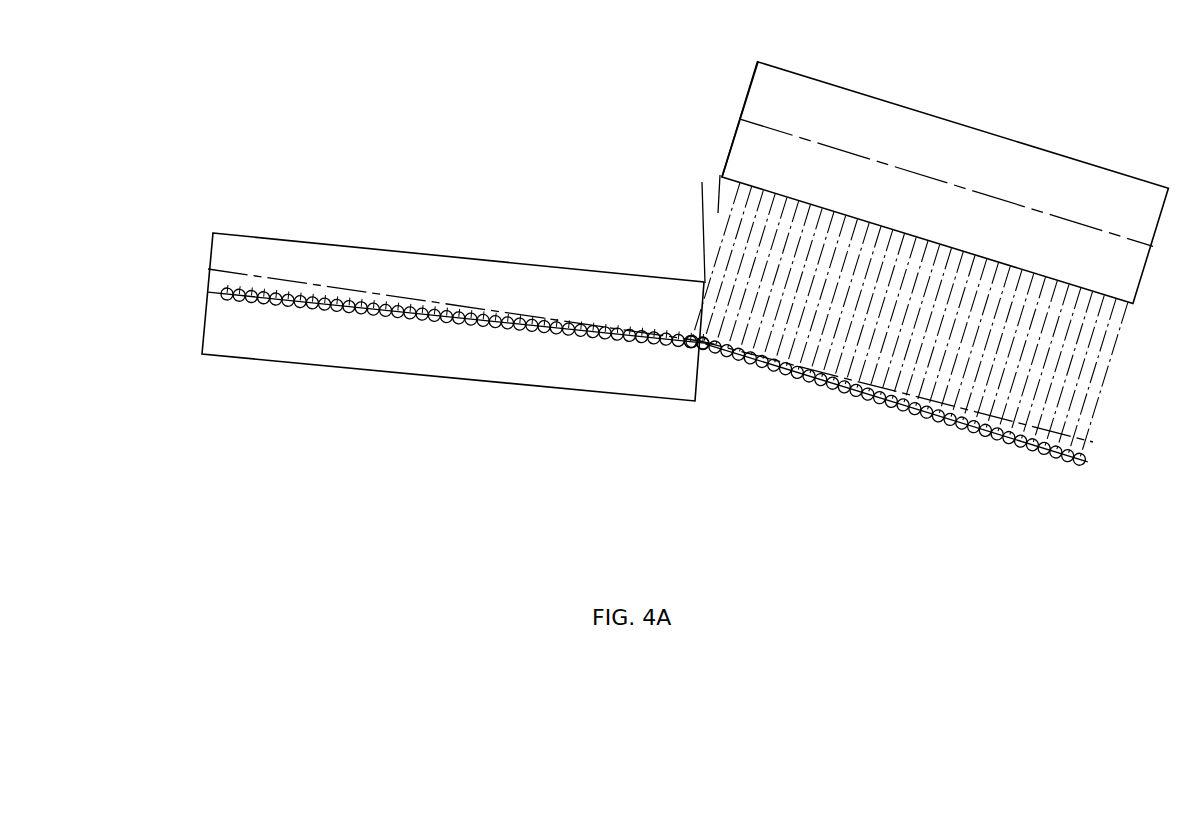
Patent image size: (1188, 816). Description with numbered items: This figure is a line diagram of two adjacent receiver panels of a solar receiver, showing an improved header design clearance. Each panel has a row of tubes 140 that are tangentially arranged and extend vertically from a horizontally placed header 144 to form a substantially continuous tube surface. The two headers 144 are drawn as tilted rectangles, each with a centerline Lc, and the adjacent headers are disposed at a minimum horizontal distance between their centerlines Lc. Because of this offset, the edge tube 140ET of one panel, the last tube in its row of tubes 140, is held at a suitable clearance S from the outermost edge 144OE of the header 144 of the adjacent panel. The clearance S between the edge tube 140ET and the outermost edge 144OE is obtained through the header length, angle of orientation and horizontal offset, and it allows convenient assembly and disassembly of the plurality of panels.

The upper header 144 is at (685, 218).
The outermost edge of the header 144OE is at (679, 104).
The tubes 140 is at (671, 356).
The edge tube 140ET is at (755, 403).
The centerline of the header Lc is at (948, 182).
The clearance S is at (757, 207).